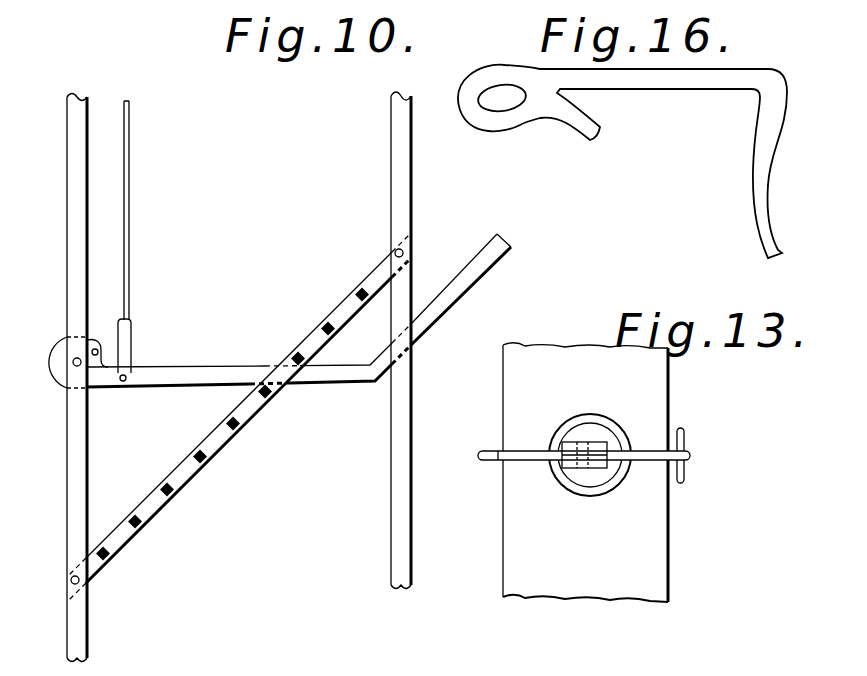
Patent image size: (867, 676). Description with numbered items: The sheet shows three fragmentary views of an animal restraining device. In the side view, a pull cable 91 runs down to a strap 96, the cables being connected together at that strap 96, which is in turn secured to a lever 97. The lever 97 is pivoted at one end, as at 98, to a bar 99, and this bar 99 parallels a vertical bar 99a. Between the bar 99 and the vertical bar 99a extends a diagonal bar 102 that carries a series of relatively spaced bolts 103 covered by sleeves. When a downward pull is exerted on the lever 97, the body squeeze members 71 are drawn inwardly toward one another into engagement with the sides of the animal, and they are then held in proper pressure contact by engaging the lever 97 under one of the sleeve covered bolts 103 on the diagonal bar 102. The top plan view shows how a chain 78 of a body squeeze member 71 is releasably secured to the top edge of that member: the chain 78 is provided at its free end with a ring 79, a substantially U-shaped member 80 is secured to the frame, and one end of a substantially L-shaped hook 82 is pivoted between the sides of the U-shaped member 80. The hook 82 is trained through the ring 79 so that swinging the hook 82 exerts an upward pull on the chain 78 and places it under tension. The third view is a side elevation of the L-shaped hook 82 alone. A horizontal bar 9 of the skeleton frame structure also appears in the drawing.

In FIG. 10, the horizontal bar 9 is at (162, 485).
In FIG. 10, the pull cable 91 is at (129, 290).
In FIG. 10, the strap 96 is at (131, 335).
In FIG. 10, the lever 97 is at (212, 367).
In FIG. 10, the pivot 98 is at (72, 365).
In FIG. 10, the bar 99 is at (72, 527).
In FIG. 10, the vertical bar 99a is at (405, 417).
In FIG. 10, the diagonal bar 102 is at (247, 413).
In FIG. 10, the bolts 103 is at (295, 348).
In FIG. 13, the body squeeze member 71 is at (653, 570).
In FIG. 13, the chain 78 is at (686, 478).
In FIG. 13, the ring 79 is at (594, 497).
In FIG. 13, the U-shaped member 80 is at (598, 447).
In FIG. 16, the L-shaped hook 82 is at (682, 84).
In FIG. 13, the L-shaped hook 82 is at (533, 461).